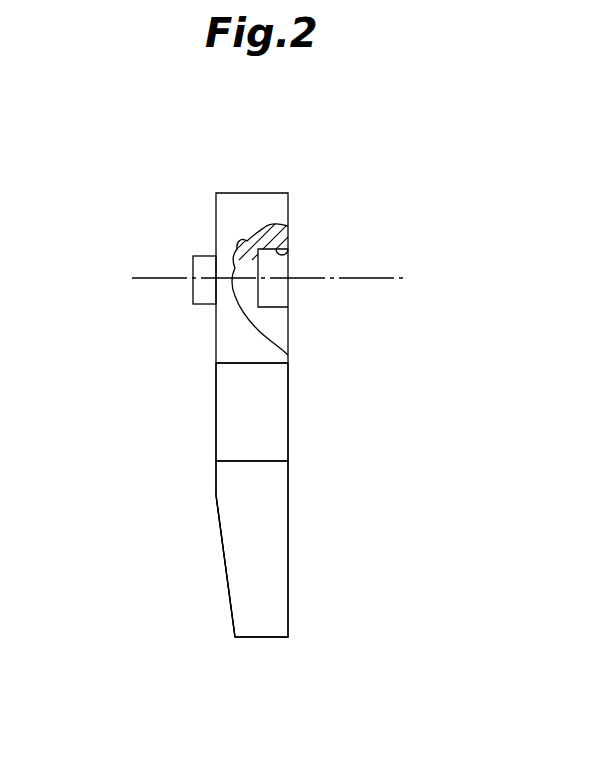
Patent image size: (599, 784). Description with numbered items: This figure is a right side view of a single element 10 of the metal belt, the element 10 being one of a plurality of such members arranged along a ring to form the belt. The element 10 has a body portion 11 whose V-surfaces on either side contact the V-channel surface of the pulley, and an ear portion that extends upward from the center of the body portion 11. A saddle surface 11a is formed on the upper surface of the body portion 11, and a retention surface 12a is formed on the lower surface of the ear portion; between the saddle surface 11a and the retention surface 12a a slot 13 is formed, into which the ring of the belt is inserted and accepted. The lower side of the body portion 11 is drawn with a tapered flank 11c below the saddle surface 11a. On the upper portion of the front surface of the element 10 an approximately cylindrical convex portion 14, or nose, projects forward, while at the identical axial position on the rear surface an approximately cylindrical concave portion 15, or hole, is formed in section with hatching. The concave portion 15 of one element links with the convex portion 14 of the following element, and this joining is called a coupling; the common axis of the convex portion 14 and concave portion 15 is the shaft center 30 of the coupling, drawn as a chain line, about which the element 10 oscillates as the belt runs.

The element 10 is at (297, 176).
The body portion 11 is at (263, 622).
The saddle surface 11a is at (277, 461).
The tapered side face of holder body 11c is at (216, 502).
The retention surface 12a is at (262, 363).
The slot 13 is at (268, 416).
The convex portion 14 is at (197, 270).
The concave portion 15 is at (281, 258).
The shaft center 30 is at (358, 282).